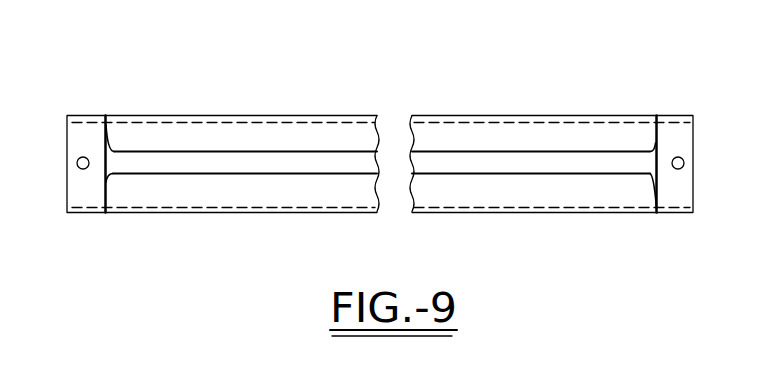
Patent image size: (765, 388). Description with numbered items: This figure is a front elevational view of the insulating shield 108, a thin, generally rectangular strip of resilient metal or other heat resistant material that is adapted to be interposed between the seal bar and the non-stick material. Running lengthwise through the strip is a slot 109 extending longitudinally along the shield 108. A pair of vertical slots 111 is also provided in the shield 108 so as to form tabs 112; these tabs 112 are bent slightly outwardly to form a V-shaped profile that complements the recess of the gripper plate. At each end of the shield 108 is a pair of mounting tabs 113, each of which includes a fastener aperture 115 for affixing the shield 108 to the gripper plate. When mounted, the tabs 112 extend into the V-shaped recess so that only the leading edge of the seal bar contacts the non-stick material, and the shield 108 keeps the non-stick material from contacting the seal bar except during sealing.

The insulating shield 108 is at (298, 100).
The slot 109 is at (318, 168).
The vertical slots 111 is at (655, 143).
The tabs 112 is at (208, 130).
The mounting tabs 113 is at (100, 207).
The fastener apertures 115 is at (77, 163).